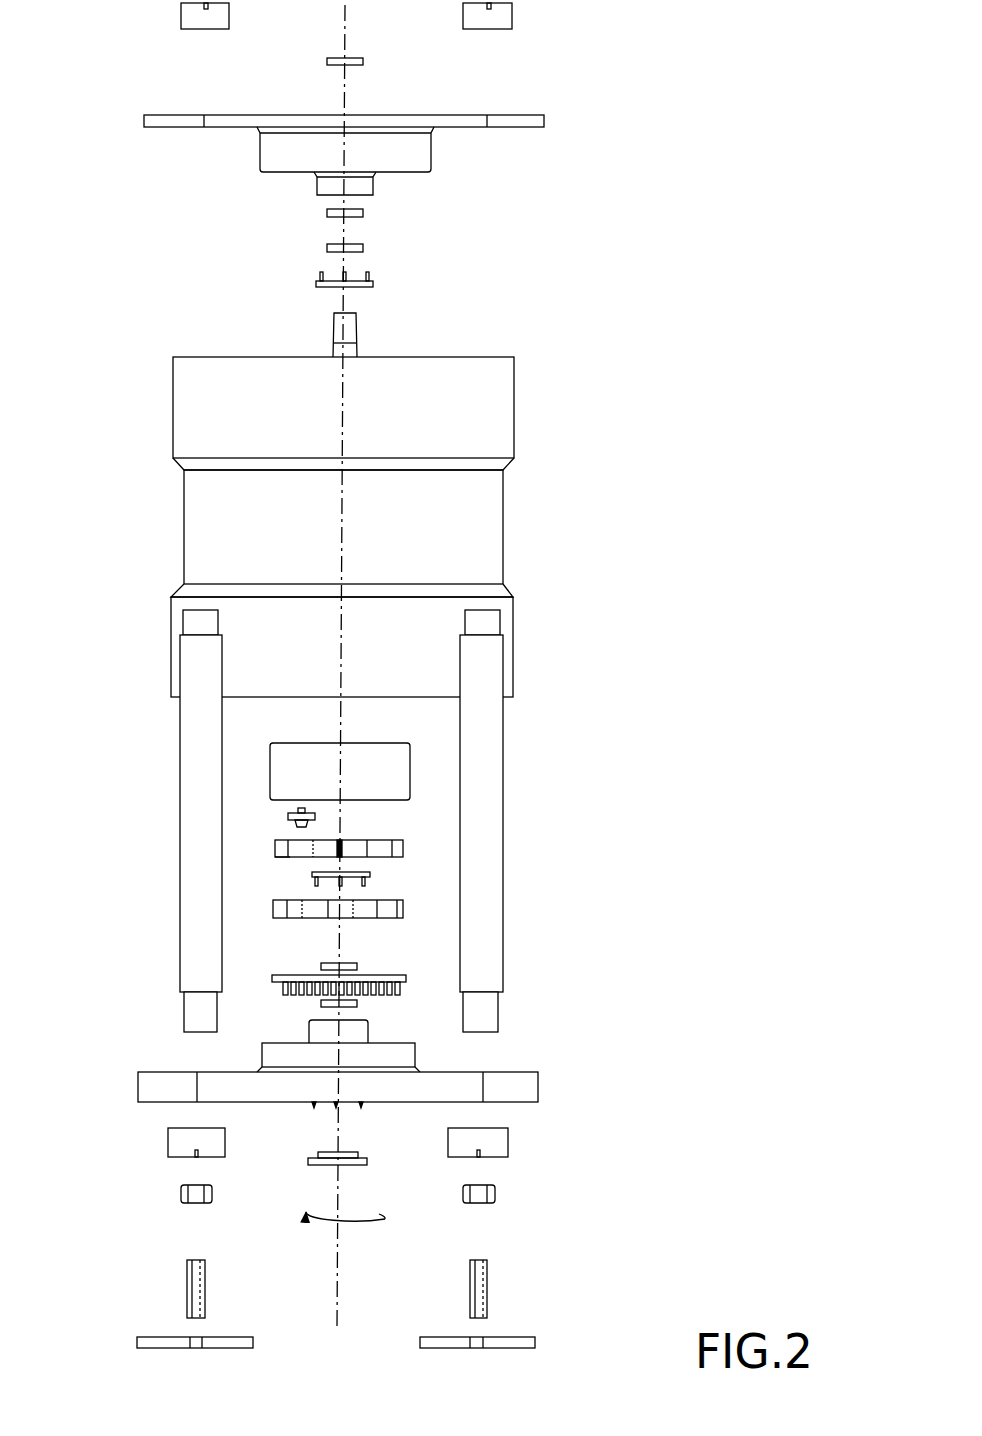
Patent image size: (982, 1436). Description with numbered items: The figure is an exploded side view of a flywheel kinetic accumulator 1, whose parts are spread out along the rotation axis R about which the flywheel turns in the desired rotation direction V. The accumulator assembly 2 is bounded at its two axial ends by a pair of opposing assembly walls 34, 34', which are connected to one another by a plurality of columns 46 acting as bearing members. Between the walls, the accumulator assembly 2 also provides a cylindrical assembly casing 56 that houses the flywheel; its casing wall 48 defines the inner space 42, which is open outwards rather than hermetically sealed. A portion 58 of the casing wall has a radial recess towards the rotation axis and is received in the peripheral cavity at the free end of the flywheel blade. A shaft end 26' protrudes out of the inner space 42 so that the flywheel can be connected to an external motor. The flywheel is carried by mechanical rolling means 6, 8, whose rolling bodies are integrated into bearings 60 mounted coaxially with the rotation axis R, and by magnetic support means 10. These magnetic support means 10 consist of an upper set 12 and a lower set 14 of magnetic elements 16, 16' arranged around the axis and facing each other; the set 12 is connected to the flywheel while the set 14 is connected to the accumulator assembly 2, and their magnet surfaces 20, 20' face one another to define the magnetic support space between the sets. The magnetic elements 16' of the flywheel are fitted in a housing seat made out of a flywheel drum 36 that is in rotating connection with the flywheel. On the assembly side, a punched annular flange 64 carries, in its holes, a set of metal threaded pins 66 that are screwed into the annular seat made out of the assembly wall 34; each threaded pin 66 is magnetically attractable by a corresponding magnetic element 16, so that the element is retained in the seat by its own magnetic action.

The flywheel kinetic accumulator 1 is at (585, 157).
The accumulator assembly 2 is at (344, 498).
The mechanical rolling means 6 is at (325, 68).
The mechanical rolling means 8 is at (362, 966).
The magnetic support means 10 is at (328, 875).
The upper set of magnetic elements 12 is at (346, 829).
The lower set of magnetic elements 14 is at (344, 919).
The magnetic element 16 is at (192, 925).
The magnetic element 16' is at (457, 827).
The magnet surface 20 is at (491, 895).
The magnet surface 20' is at (196, 828).
The shaft end 26' is at (462, 335).
The assembly wall 34 is at (380, 1184).
The assembly wall 34' is at (374, 116).
The flywheel drum 36 is at (412, 767).
The inner space 42 is at (344, 498).
The columns 46 is at (178, 757).
The casing wall 48 is at (500, 435).
The assembly casing 56 is at (518, 405).
The portion having a radial recess 58 is at (183, 533).
The bearings 60 is at (332, 55).
The punched annular flange 64 is at (233, 1018).
The threaded pins 66 is at (282, 990).
The rotation direction V is at (317, 1228).
The rotation axis R is at (338, 1302).